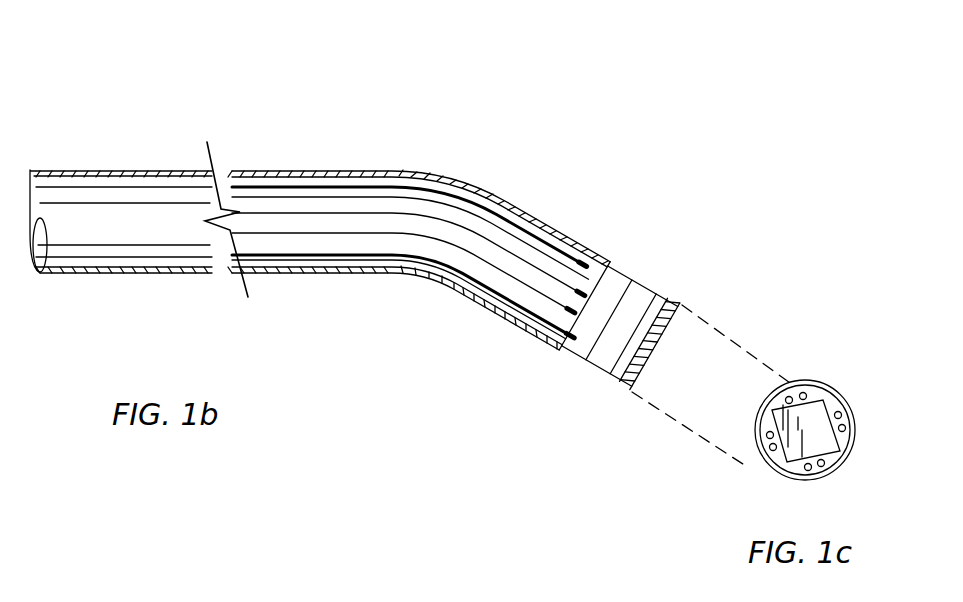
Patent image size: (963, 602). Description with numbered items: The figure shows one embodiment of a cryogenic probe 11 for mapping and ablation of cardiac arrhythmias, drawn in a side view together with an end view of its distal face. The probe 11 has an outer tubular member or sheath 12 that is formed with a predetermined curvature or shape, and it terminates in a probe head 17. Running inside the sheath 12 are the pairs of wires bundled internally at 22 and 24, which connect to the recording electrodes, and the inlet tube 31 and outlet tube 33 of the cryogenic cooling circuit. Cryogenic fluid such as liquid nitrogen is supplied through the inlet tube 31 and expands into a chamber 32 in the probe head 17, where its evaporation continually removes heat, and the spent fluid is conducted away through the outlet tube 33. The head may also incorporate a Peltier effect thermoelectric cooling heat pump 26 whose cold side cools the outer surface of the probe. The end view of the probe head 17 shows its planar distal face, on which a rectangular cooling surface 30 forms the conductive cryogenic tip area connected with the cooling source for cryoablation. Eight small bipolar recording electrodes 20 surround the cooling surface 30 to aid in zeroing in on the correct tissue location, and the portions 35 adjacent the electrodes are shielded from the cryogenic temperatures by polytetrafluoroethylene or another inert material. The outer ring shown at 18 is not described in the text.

In FIG. 1b, the cryogenic probe 11 is at (385, 108).
In FIG. 1b, the outer tubular member or sheath 12 is at (298, 172).
In FIG. 1b, the probe head 17 is at (650, 297).
In FIG. 1c, the outer housing ring 18 is at (849, 402).
In FIG. 1c, the bipolar recording electrodes 20 is at (846, 431).
In FIG. 1b, the bundled wires 22 is at (510, 208).
In FIG. 1b, the bundled wires 24 is at (488, 300).
In FIG. 1b, the thermoelectric cooling heat pump 26 is at (600, 365).
In FIG. 1c, the cooling surface 30 is at (787, 447).
In FIG. 1b, the inlet tube 31 is at (425, 195).
In FIG. 1b, the chamber 32 is at (660, 294).
In FIG. 1b, the outlet tube 33 is at (375, 265).
In FIG. 1c, the shielded portions 35 is at (812, 392).